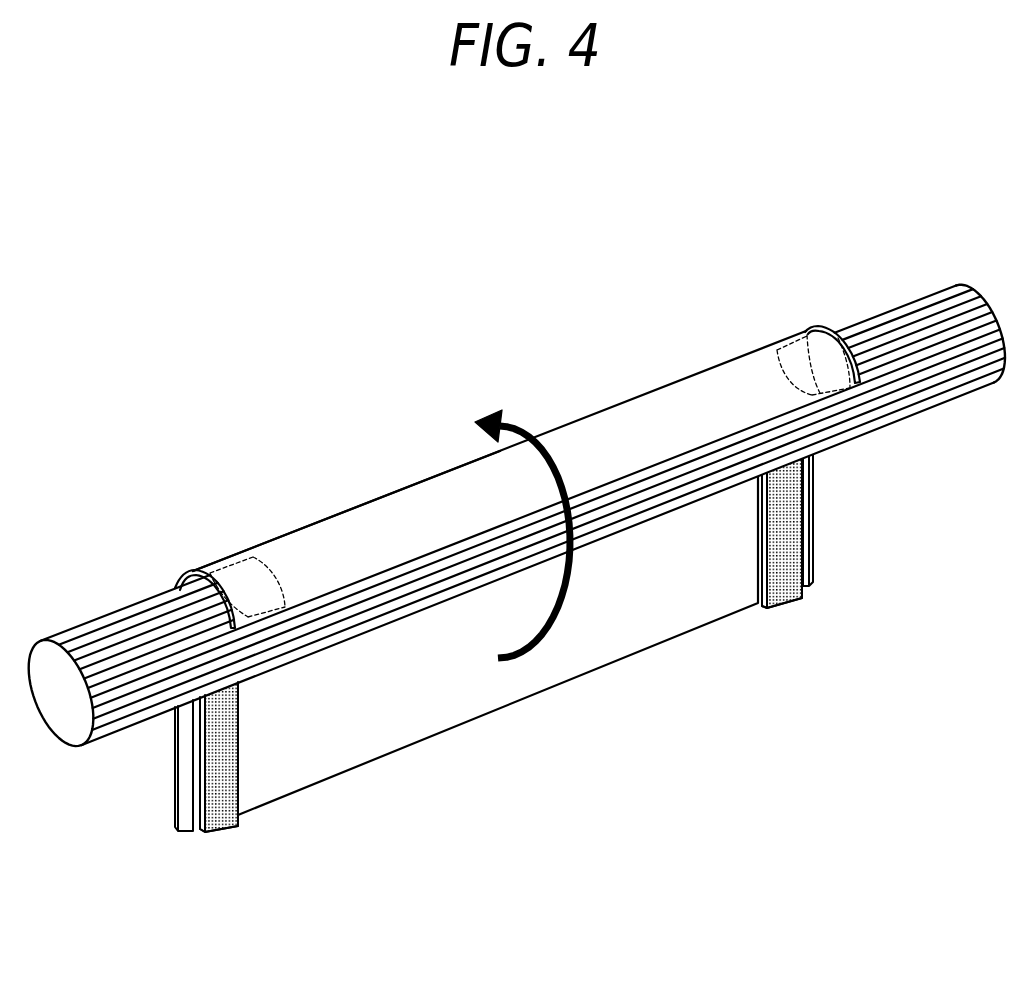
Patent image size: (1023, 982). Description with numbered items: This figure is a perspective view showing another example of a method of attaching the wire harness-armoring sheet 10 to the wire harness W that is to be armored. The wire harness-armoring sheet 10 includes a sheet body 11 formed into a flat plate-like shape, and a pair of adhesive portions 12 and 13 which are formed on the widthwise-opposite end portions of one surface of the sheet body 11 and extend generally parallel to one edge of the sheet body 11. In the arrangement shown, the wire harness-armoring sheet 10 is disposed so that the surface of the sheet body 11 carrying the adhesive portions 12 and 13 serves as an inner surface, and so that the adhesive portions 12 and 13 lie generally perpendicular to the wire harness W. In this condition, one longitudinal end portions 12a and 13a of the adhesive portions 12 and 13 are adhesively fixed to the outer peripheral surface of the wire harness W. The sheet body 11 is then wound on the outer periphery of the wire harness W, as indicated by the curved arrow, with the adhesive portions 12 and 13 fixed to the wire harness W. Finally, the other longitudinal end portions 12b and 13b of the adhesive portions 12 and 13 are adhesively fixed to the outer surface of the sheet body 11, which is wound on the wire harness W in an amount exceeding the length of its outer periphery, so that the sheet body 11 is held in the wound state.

The wire harness W is at (887, 313).
The wire harness-armoring sheet 10 is at (585, 417).
The sheet body 11 is at (389, 507).
The adhesive portion 12 is at (252, 795).
The one longitudinal end portion 12a is at (248, 575).
The other longitudinal end portion 12b is at (229, 810).
The adhesive portion 13 is at (762, 575).
The one longitudinal end portion 13a is at (812, 352).
The other longitudinal end portion 13b is at (787, 592).